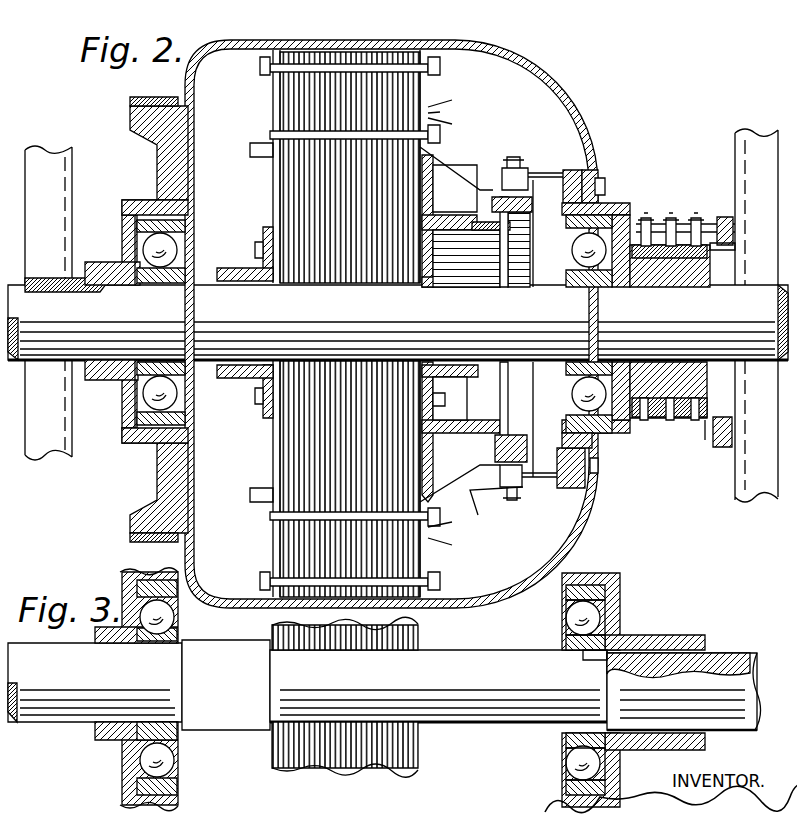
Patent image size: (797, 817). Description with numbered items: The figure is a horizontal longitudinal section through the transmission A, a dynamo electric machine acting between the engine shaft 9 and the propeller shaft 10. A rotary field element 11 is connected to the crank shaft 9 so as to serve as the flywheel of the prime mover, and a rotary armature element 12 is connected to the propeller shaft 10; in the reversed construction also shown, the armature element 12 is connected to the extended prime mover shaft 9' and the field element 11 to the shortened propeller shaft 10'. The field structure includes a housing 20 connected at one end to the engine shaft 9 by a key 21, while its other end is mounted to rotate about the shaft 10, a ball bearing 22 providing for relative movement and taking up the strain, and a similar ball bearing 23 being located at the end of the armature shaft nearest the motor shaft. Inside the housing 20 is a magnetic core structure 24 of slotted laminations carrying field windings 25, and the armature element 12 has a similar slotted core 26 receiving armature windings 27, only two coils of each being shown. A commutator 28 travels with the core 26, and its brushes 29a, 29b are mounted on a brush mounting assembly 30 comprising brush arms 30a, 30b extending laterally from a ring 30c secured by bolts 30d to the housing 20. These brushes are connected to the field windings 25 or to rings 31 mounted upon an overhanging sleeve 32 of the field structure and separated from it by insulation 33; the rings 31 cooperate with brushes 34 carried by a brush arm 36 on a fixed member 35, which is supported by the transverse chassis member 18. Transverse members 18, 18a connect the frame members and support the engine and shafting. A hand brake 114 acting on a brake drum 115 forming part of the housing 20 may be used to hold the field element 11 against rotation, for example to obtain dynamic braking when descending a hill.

In FIG. 2, the engine shaft 9 is at (67, 337).
In FIG. 3, the extended prime mover shaft 9' is at (139, 707).
In FIG. 2, the propeller shaft 10 is at (398, 322).
In FIG. 3, the shortened propeller shaft 10' is at (675, 676).
In FIG. 2, the field element 11 is at (372, 56).
In FIG. 2, the armature element 12 is at (405, 158).
In FIG. 3, the armature element 12 is at (420, 630).
In FIG. 2, the transverse member 18 is at (756, 315).
In FIG. 2, the transverse member 18a is at (42, 458).
In FIG. 2, the housing 20 is at (490, 48).
In FIG. 2, the key 21 is at (112, 301).
In FIG. 2, the ball bearing 22 is at (602, 228).
In FIG. 2, the ball bearing 23 is at (140, 212).
In FIG. 2, the magnetic core structure 24 is at (262, 572).
In FIG. 2, the field windings 25 is at (440, 113).
In FIG. 2, the core 26 is at (268, 228).
In FIG. 3, the core 26 is at (295, 768).
In FIG. 2, the armature windings 27 is at (250, 152).
In FIG. 2, the commutator 28 is at (515, 232).
In FIG. 2, the brush 29a is at (535, 172).
In FIG. 2, the brush 29b is at (513, 498).
In FIG. 2, the terminal assembly 30 is at (690, 245).
In FIG. 2, the brush arm 30a is at (585, 168).
In FIG. 2, the brush arm 30b is at (588, 505).
In FIG. 2, the ring 30c is at (592, 185).
In FIG. 2, the bolts 30d is at (606, 192).
In FIG. 2, the rings 31 is at (615, 287).
In FIG. 2, the overhanging sleeve 32 is at (658, 287).
In FIG. 2, the insulation 33 is at (705, 440).
In FIG. 2, the brushes 34 is at (670, 216).
In FIG. 2, the fixed member 35 is at (735, 228).
In FIG. 2, the brush arm 36 is at (707, 218).
In FIG. 2, the hand brake 114 is at (128, 122).
In FIG. 2, the brake drum 115 is at (135, 99).
In FIG. 3, the brake drum 115 is at (129, 688).
In FIG. 2, the transmission A is at (545, 68).